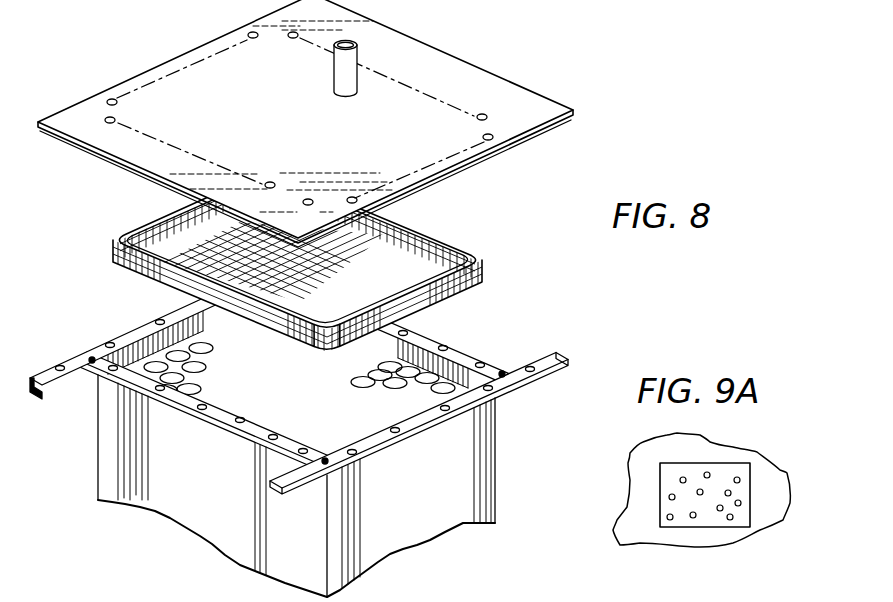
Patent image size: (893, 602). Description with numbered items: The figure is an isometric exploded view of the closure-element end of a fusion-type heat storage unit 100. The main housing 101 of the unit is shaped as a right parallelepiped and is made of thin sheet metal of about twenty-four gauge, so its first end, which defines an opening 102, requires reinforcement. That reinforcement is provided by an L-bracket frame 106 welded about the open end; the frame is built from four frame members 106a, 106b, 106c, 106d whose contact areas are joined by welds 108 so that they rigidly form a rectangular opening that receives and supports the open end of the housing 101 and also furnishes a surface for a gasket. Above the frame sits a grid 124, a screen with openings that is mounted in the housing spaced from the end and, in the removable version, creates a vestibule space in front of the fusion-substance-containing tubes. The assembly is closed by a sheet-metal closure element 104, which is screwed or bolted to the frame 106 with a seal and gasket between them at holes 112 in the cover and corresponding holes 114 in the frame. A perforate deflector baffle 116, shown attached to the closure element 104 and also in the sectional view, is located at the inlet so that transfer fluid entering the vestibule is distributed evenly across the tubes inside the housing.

In FIG. 8, the fusion-type heat storage unit 100 is at (178, 527).
In FIG. 8, the main housing 101 is at (470, 494).
In FIG. 8, the opening 102 is at (258, 412).
In FIG. 8, the closure element 104 is at (305, 123).
In FIG. 8, the L-bracket frame 106 is at (299, 381).
In FIG. 8, the frame member 106a is at (186, 404).
In FIG. 8, the frame member 106b is at (420, 424).
In FIG. 8, the frame member 106c is at (462, 348).
In FIG. 8, the frame member 106d is at (146, 328).
In FIG. 8, the welds 108 is at (92, 360).
In FIG. 8, the holes 112 is at (111, 97).
In FIG. 8, the holes 114 is at (358, 448).
In FIG. 8, the perforate deflector baffle 116 is at (336, 66).
In FIG. 9A, the perforate deflector baffle 116 is at (748, 488).
In FIG. 8, the grid 124 is at (115, 237).